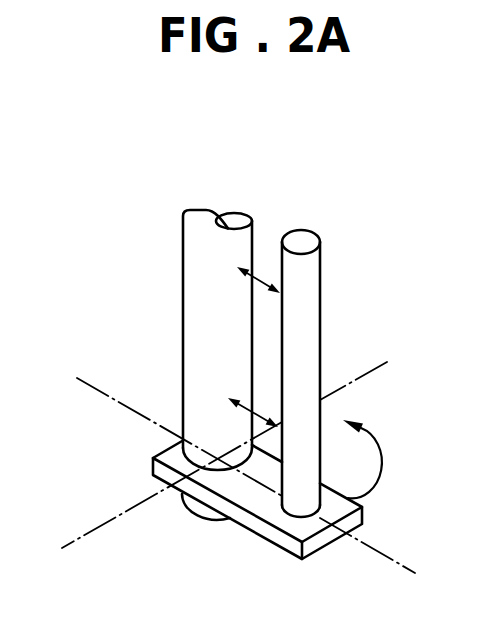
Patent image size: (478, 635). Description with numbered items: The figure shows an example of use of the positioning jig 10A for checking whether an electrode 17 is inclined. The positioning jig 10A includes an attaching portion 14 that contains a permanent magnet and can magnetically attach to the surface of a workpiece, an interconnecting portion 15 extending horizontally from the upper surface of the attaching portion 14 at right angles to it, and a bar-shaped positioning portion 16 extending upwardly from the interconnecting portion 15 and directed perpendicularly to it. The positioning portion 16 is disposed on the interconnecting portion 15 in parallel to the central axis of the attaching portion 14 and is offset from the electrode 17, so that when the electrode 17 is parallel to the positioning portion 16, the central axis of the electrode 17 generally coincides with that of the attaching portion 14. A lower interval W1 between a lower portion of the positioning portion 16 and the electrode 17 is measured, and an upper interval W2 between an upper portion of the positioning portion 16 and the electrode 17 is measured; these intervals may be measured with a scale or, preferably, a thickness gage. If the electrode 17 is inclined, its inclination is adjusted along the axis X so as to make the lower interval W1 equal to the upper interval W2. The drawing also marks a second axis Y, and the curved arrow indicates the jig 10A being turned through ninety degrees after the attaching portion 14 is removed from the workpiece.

The positioning jig 10A is at (251, 180).
The attaching portion 14 is at (198, 503).
The interconnecting portion 15 is at (270, 532).
The positioning portion 16 is at (302, 238).
The electrode 17 is at (200, 310).
The lower interval W1 is at (258, 413).
The upper interval W2 is at (258, 283).
The axis X— X is at (242, 478).
The Y axis Y is at (221, 457).